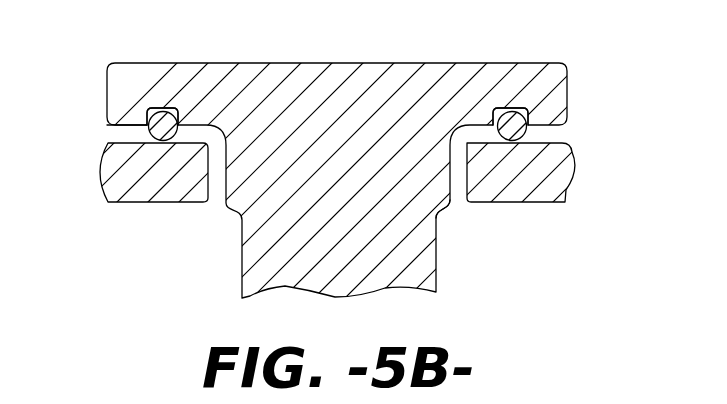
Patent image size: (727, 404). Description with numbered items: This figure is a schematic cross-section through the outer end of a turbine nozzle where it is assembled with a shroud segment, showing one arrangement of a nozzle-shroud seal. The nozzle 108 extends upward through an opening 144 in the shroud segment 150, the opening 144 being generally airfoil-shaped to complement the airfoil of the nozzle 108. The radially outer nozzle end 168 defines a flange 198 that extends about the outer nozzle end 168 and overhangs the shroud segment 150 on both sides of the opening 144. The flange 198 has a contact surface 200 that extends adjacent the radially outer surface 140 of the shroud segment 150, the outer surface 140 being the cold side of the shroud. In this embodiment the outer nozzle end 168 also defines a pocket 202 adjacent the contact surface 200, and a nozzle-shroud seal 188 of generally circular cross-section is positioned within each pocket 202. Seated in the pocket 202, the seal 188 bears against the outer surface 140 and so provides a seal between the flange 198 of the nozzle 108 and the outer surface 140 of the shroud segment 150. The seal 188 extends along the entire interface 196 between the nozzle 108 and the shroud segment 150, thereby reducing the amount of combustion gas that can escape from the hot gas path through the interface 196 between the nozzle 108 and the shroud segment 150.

The nozzle 108 is at (276, 263).
The radially outer nozzle end 168 is at (313, 100).
The flange 198 is at (128, 77).
The nozzle-shroud seal 188 is at (500, 113).
The pocket 202 is at (522, 110).
The radially outer surface 140 is at (194, 140).
The interface 196 is at (117, 135).
The opening 144 is at (457, 203).
The shroud segment 150 is at (115, 175).
The contact surface 200 is at (546, 138).